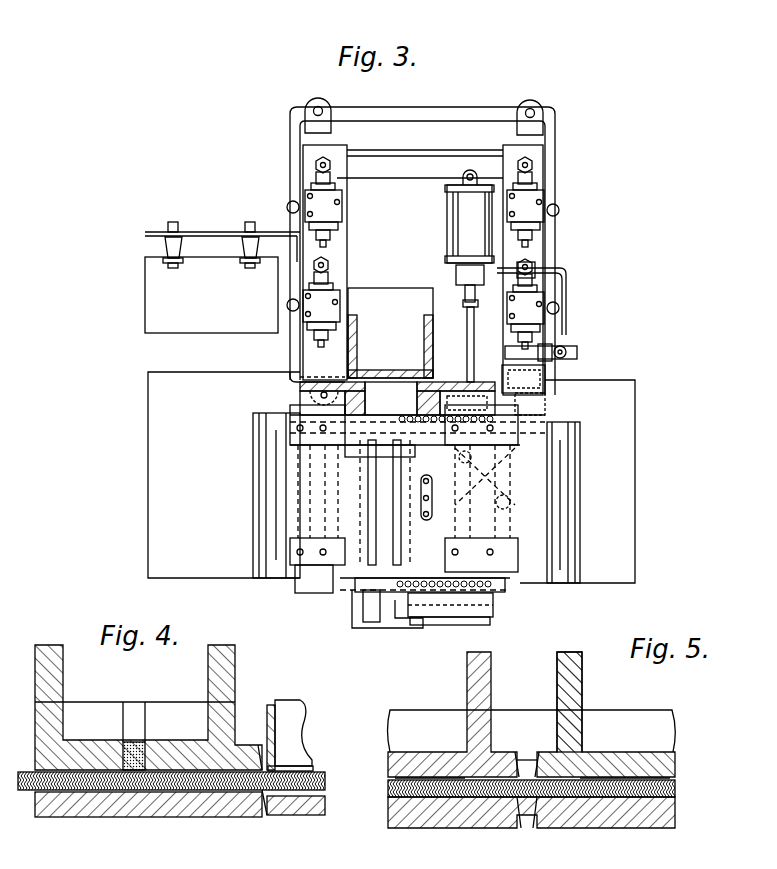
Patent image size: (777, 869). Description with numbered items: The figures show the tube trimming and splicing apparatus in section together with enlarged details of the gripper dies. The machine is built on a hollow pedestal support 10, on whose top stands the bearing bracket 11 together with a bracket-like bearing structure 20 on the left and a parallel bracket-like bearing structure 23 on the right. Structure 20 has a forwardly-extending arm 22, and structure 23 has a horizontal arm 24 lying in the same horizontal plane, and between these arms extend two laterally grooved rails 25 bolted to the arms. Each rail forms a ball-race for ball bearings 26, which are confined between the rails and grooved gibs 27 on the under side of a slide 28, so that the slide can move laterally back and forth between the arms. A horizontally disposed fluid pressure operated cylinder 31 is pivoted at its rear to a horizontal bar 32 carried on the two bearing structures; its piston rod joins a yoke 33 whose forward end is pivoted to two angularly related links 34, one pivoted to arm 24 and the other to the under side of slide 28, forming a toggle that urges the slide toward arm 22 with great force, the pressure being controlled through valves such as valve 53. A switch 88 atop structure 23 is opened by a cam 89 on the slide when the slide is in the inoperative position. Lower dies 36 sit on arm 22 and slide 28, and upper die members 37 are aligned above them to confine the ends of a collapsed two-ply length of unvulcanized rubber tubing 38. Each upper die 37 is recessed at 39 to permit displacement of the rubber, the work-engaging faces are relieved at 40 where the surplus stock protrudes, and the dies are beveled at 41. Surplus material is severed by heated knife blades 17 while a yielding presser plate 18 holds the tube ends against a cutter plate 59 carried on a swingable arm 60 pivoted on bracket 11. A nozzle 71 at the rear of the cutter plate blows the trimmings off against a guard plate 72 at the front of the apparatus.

In FIG. 3, the pedestal support 10 is at (450, 122).
In FIG. 3, the horizontal bar 32 is at (417, 162).
In FIG. 3, the fluid pressure operated cylinder 31 is at (458, 228).
In FIG. 3, the bracket-like bearing structure 23 is at (530, 255).
In FIG. 3, the valve 53 is at (567, 348).
In FIG. 3, the bearing bracket 11 is at (363, 370).
In FIG. 3, the swingable arm 60 is at (388, 384).
In FIG. 3, the yoke 33 is at (466, 352).
In FIG. 3, the laterally grooved gibs 27 is at (450, 380).
In FIG. 3, the bracket-like bearing structure 20 is at (300, 376).
In FIG. 3, the laterally grooved rails 25 is at (385, 410).
In FIG. 3, the ball bearings 26 is at (407, 420).
In FIG. 3, the switch 88 is at (548, 382).
In FIG. 3, the cam 89 is at (550, 405).
In FIG. 3, the nozzle 71 is at (372, 452).
In FIG. 3, the links 34 is at (514, 472).
In FIG. 3, the arm 22 is at (305, 594).
In FIG. 3, the lower die 36 is at (352, 592).
In FIG. 4, the lower die 36 is at (200, 817).
In FIG. 5, the lower die 36 is at (455, 828).
In FIG. 3, the cutter plate 59 is at (372, 600).
In FIG. 4, the cutter plate 59 is at (305, 815).
In FIG. 3, the guard plate 72 is at (395, 625).
In FIG. 3, the slide 28 is at (440, 618).
In FIG. 3, the horizontal arm 24 is at (520, 535).
In FIG. 4, the upper die member 37 is at (185, 740).
In FIG. 5, the upper die member 37 is at (468, 730).
In FIG. 4, the longitudinal recess 39 is at (128, 748).
In FIG. 5, the longitudinal recess 39 is at (395, 777).
In FIG. 4, the recess 40 is at (268, 740).
In FIG. 5, the recess 40 is at (578, 685).
In FIG. 4, the bevel 41 is at (262, 745).
In FIG. 5, the bevel 41 is at (540, 840).
In FIG. 4, the knife blades 17 is at (276, 712).
In FIG. 4, the presser plate 18 is at (306, 765).
In FIG. 4, the unvulcanized rubber tubing 38 is at (20, 792).
In FIG. 5, the unvulcanized rubber tubing 38 is at (676, 795).